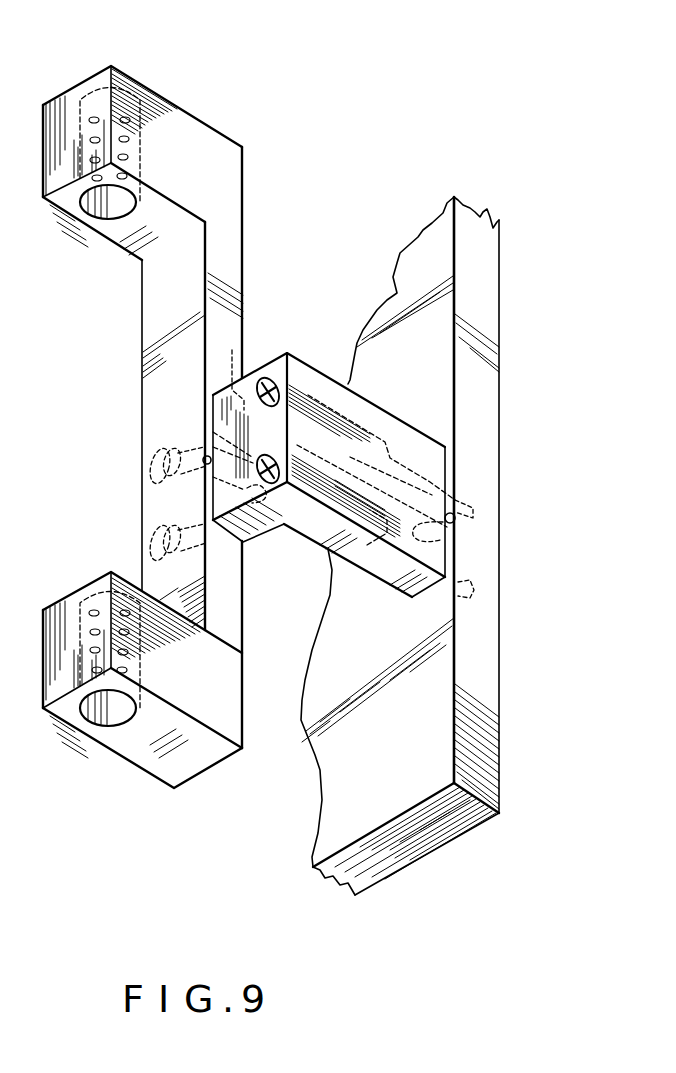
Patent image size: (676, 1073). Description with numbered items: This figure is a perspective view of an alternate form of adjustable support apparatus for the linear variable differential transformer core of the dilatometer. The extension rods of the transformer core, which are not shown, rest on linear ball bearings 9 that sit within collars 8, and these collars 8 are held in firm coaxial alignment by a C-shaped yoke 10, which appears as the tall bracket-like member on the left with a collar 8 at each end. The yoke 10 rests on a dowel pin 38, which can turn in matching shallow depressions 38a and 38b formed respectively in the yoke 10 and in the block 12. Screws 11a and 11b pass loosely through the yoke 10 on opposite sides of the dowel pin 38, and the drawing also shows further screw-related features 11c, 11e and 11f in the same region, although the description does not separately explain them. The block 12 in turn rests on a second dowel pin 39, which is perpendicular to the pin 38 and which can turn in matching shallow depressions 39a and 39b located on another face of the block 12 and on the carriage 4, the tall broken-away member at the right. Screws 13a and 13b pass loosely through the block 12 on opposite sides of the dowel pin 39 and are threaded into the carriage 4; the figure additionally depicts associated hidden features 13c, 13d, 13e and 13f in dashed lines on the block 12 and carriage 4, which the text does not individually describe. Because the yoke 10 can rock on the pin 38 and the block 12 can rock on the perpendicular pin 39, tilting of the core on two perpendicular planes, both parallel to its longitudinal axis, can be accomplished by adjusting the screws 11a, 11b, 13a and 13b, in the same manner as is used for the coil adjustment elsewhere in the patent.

The carriage 4 is at (323, 843).
The collar 8 is at (85, 215).
The linear ball bearing 9 is at (145, 124).
The C-shaped yoke 10 is at (143, 420).
The screw 11a is at (142, 463).
The screw 11b is at (150, 547).
The screw 11c is at (205, 458).
The screw 11e is at (232, 350).
The screw 11f is at (250, 523).
The block 12 is at (403, 440).
The screw 13a is at (266, 385).
The screw 13b is at (270, 485).
The screw hole 13c is at (313, 400).
The screw hole 13d is at (348, 533).
The screw hole 13e is at (483, 513).
The screw hole 13f is at (475, 598).
The dowel pin 38 is at (205, 460).
The shallow depression 38a is at (203, 464).
The shallow depression 38b is at (212, 458).
The dowel pin 39 is at (425, 540).
The shallow depression 39a is at (447, 520).
The shallow depression 39b is at (453, 520).